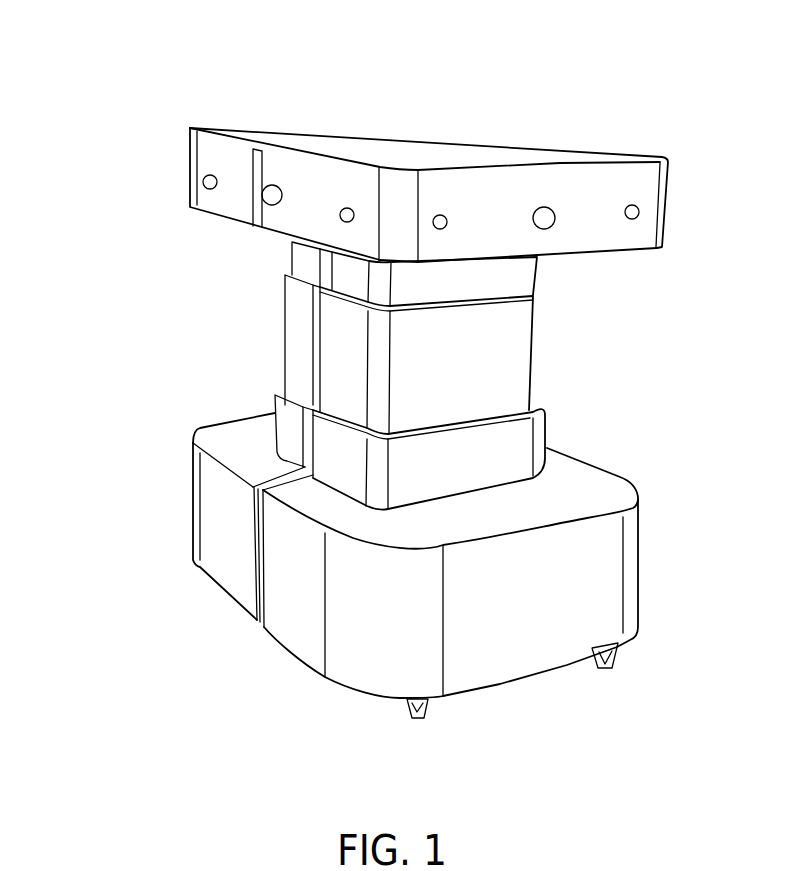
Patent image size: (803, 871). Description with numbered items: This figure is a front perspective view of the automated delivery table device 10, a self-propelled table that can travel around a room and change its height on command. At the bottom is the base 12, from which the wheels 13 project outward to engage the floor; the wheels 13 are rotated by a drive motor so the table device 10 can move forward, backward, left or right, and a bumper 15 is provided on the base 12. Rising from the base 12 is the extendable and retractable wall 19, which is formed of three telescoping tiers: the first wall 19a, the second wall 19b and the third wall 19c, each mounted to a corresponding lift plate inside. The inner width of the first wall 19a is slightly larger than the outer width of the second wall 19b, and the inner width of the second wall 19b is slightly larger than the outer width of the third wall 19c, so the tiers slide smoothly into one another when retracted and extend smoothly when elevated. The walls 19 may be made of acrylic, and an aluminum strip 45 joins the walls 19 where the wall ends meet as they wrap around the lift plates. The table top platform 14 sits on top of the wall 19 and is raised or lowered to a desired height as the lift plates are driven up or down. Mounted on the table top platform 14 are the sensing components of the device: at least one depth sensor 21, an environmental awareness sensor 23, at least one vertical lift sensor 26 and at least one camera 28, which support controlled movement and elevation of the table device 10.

The automated delivery table device 10 is at (143, 47).
The base 12 is at (435, 597).
The wheels 13 is at (416, 719).
The table top platform 14 is at (522, 153).
The bumper 15 is at (370, 650).
The extendable and retractable wall 19 is at (572, 275).
The first wall 19a is at (512, 453).
The second wall 19b is at (460, 355).
The third wall 19c is at (487, 277).
The depth sensor 21 is at (203, 181).
The environmental awareness sensor 23 is at (440, 215).
The vertical lift sensor 26 is at (347, 208).
The camera 28 is at (271, 186).
The aluminum strip 45 is at (256, 611).